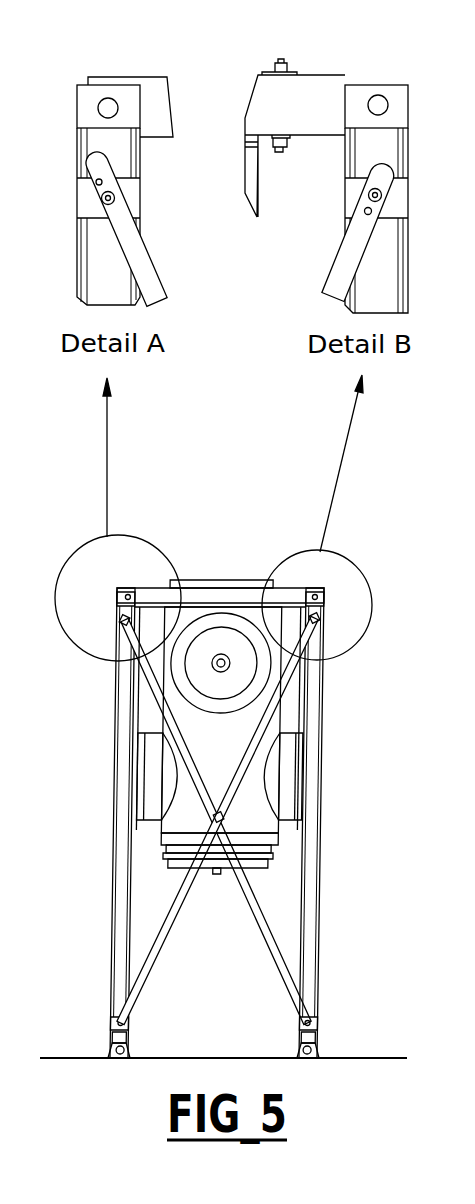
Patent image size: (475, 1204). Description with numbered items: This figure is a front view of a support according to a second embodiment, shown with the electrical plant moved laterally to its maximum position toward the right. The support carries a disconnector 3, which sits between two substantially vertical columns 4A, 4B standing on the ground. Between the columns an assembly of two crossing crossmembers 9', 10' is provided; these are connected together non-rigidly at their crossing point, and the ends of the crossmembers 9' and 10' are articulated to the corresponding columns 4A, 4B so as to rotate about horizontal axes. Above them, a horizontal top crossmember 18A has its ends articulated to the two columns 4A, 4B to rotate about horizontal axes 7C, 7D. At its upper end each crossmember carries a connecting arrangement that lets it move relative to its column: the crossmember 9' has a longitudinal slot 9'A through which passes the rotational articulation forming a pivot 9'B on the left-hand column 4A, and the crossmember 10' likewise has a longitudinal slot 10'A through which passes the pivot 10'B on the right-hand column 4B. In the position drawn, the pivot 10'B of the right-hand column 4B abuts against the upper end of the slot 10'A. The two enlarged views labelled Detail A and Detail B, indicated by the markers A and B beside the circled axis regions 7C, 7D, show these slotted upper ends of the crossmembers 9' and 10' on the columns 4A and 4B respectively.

The disconnector 3 is at (227, 759).
The left-hand column 4A is at (90, 268).
The right-hand column 4B is at (388, 277).
The horizontal axis 7C is at (114, 560).
The horizontal axis 7D is at (349, 549).
The crossmember 9' is at (178, 579).
The longitudinal slot 9'A is at (71, 159).
The pivot 9'B is at (151, 185).
The crossmember 10' is at (294, 562).
The longitudinal slot 10'A is at (418, 202).
The pivot 10'B is at (419, 151).
The horizontal top crossmember 18A is at (308, 95).
The detail A region A is at (83, 656).
The detail B region B is at (359, 650).